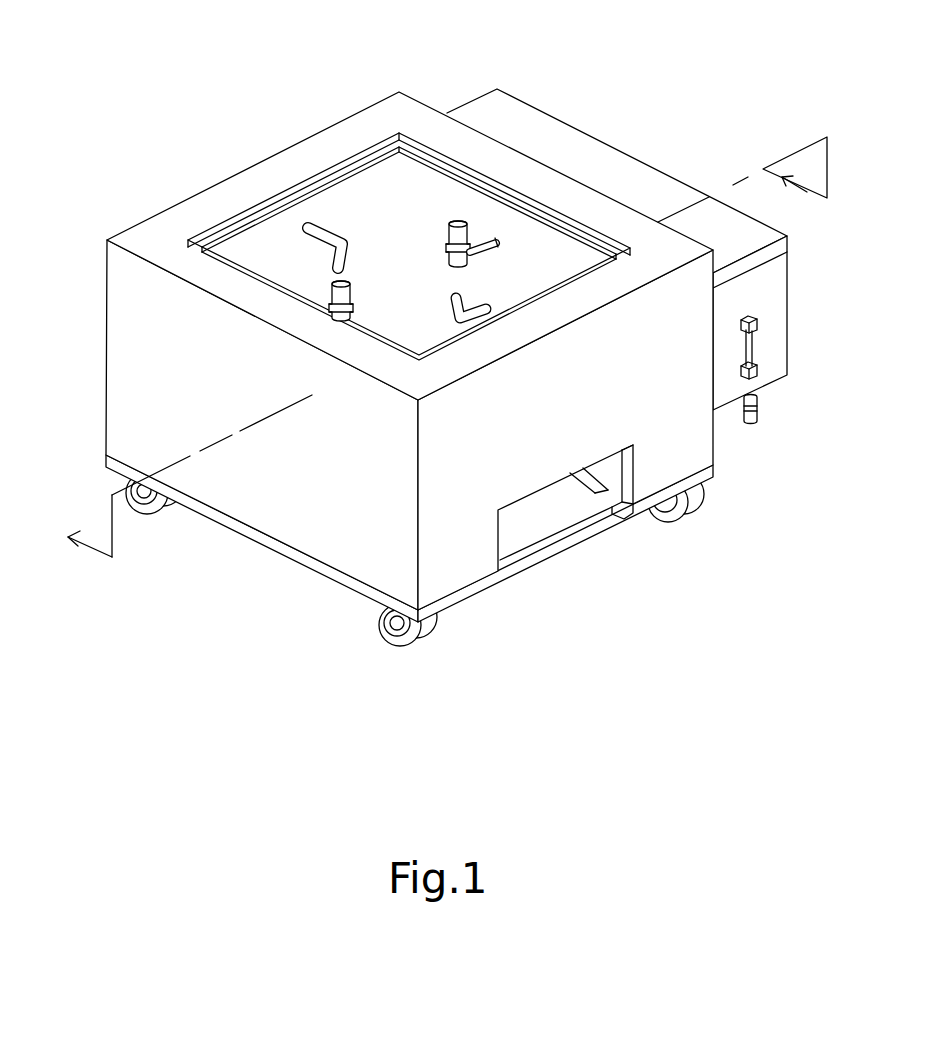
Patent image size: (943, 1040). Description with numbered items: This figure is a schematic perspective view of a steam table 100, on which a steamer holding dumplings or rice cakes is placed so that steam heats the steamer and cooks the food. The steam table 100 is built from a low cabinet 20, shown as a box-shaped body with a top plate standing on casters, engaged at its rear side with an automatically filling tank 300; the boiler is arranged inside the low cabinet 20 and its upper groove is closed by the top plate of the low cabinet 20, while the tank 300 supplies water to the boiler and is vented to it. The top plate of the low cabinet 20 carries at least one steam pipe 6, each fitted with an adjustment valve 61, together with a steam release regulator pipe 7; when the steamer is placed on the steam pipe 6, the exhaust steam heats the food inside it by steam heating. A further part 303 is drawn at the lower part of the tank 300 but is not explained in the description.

The steam table 100 is at (456, 338).
The low cabinet 20 is at (318, 531).
The steam pipe 6 is at (331, 281).
The steam release regulator pipe 7 is at (316, 226).
The adjustment valve 61 is at (499, 241).
The automatically filling tank 300 is at (777, 287).
The bolt 303 is at (758, 402).